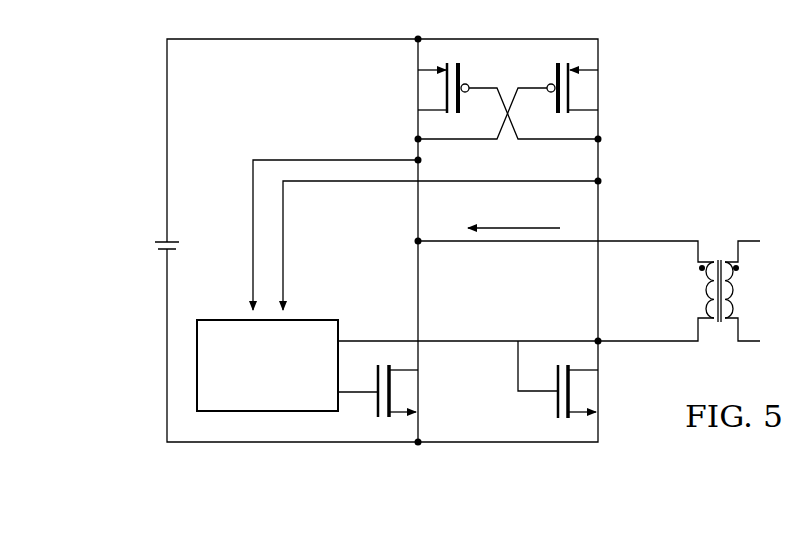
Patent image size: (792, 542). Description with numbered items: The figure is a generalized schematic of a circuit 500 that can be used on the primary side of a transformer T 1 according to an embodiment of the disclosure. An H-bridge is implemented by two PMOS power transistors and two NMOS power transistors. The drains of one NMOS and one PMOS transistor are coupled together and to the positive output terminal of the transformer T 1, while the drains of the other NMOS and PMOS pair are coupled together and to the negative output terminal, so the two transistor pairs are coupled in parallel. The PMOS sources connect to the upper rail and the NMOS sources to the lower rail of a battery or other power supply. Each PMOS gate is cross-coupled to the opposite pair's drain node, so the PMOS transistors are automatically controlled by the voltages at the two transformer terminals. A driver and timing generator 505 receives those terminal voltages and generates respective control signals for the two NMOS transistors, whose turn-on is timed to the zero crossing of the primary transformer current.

The circuit 500 is at (108, 94).
The driver and timing generator 505 is at (227, 320).
The transformer T1 1 is at (729, 278).